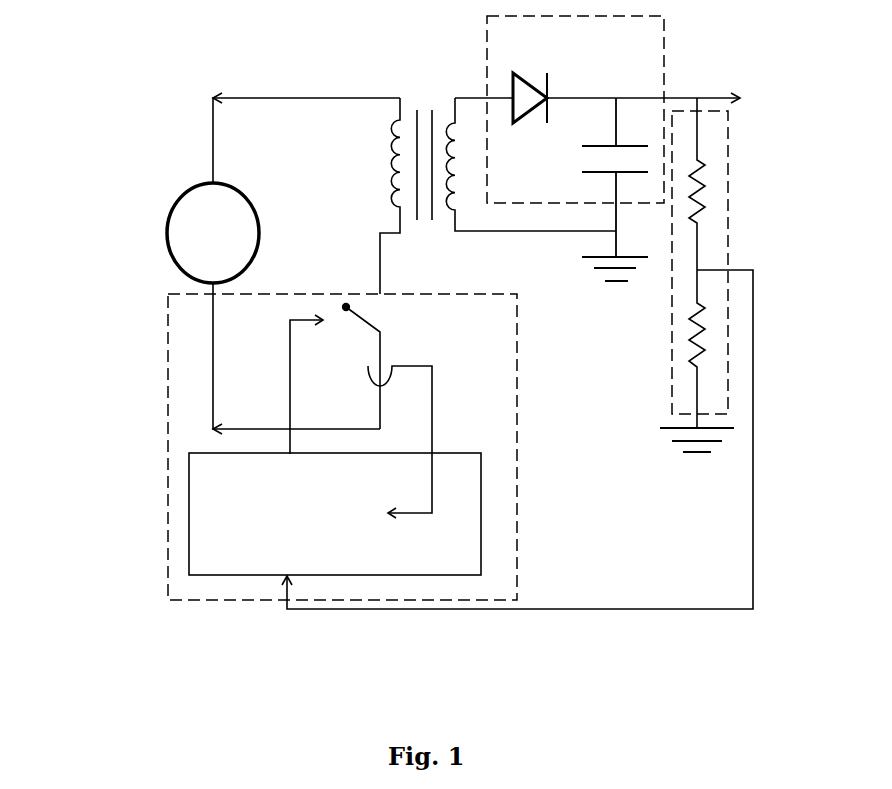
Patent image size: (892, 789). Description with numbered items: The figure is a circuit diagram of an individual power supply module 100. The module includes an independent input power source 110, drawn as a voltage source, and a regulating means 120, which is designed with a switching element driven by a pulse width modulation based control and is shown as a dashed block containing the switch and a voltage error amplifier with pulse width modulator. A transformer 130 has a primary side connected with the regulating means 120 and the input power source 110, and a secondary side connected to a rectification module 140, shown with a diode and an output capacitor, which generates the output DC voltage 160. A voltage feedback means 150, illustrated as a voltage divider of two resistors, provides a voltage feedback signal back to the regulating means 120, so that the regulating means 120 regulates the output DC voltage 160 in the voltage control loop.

The power supply module 100 is at (150, 641).
The independent input power source 110 is at (157, 238).
The regulating means 120 is at (532, 492).
The transformer 130 is at (420, 100).
The rectification module 140 is at (670, 42).
The voltage feedback means 150 is at (728, 253).
The output DC voltage 160 is at (783, 78).